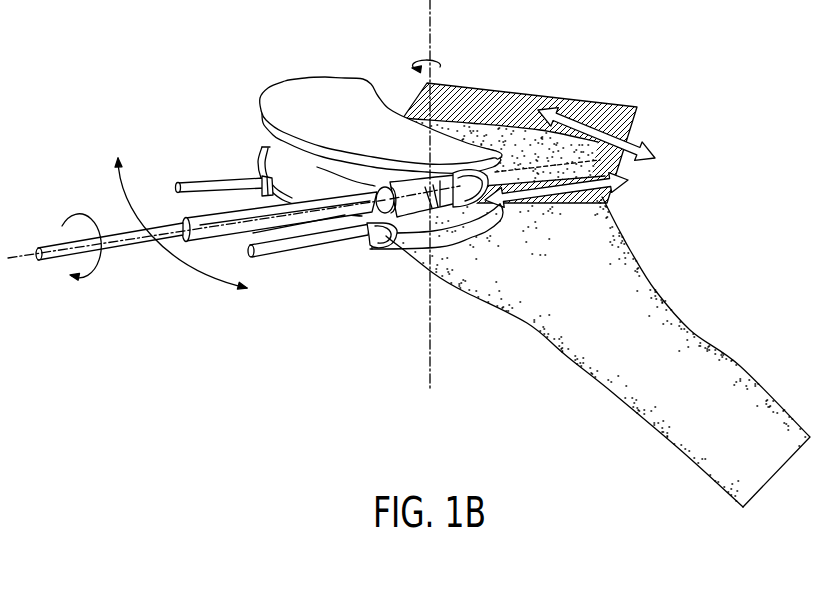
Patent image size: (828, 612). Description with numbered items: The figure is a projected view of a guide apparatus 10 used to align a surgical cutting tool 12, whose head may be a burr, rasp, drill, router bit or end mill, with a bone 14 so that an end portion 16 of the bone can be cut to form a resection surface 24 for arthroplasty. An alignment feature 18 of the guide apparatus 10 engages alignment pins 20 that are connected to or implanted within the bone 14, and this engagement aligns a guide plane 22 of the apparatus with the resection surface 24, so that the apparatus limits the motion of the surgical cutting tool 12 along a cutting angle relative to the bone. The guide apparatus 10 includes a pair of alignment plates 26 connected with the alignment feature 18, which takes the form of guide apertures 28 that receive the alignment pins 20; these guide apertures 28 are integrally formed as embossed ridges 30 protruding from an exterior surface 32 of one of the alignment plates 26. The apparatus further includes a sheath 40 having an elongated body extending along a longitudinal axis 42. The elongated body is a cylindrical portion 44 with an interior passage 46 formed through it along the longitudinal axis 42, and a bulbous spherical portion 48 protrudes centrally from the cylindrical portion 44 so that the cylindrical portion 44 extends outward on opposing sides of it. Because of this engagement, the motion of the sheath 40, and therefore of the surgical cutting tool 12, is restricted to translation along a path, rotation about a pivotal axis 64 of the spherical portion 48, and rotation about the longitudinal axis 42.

The guide apparatus 10 is at (243, 67).
The surgical cutting tool 12 is at (122, 248).
The bone 14 is at (649, 310).
The end portion 16 is at (667, 154).
The alignment feature 18 is at (338, 267).
The alignment pins 20 is at (196, 183).
The guide plane 22 is at (598, 107).
The resection surface 24 is at (502, 133).
The alignment plates 26 is at (285, 163).
The guide apertures 28 is at (263, 182).
The embossed ridges 30 is at (388, 248).
The exterior surface 32 is at (357, 92).
The sheath 40 is at (466, 266).
The longitudinal axis 42 is at (13, 252).
The cylindrical portion 44 is at (467, 190).
The interior passage 46 is at (380, 203).
The spherical portion 48 is at (440, 203).
The pivotal axis 64 is at (437, 15).